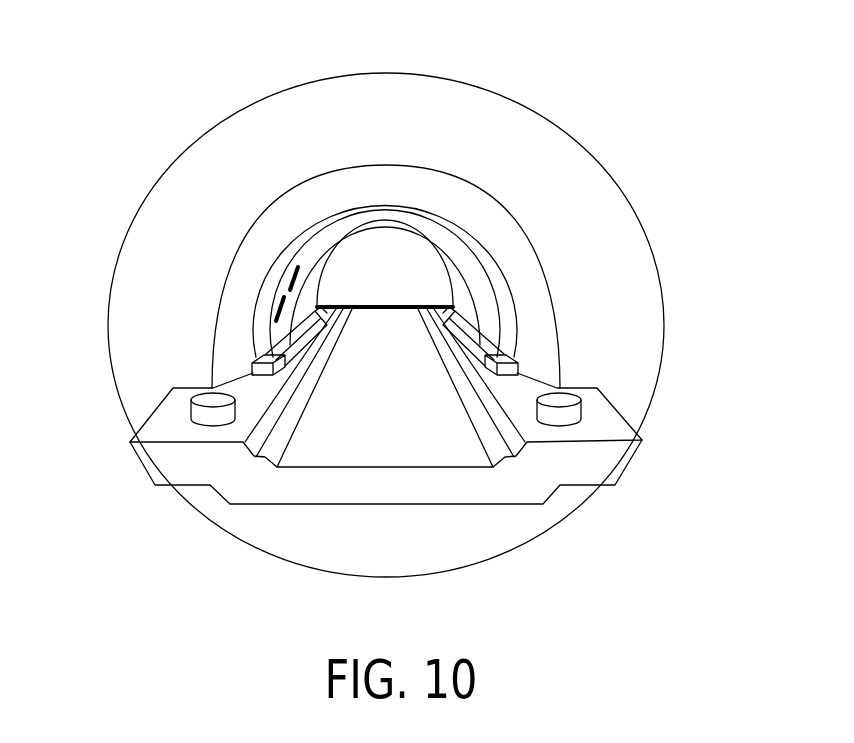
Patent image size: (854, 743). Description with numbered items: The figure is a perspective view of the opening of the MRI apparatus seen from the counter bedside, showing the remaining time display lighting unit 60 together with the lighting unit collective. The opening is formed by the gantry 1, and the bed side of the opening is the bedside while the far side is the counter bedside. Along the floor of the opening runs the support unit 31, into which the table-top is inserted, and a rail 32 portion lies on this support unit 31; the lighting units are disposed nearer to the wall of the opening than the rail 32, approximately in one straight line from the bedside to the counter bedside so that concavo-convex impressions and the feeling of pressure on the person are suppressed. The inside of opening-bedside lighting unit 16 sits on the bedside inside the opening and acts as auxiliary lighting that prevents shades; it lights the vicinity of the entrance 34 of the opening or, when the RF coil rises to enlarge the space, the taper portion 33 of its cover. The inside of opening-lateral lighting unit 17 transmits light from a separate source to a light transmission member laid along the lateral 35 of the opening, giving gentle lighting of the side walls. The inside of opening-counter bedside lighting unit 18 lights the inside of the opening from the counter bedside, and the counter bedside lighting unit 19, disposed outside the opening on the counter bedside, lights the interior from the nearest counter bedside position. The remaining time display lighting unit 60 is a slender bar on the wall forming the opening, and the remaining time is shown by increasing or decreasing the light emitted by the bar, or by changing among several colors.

The gantry 1 is at (538, 74).
The inside of opening-bedside lighting unit 16 is at (298, 264).
The inside of opening-lateral lighting unit 17 is at (292, 332).
The inside of opening-counter bedside lighting unit 18 is at (258, 358).
The counter bedside lighting unit 19 is at (204, 397).
The support unit 31 is at (162, 426).
The rail 32 is at (315, 444).
The taper portion 33 is at (415, 222).
The entrance 34 is at (370, 188).
The lateral 35 is at (329, 250).
The remaining time display lighting unit 60 is at (295, 267).